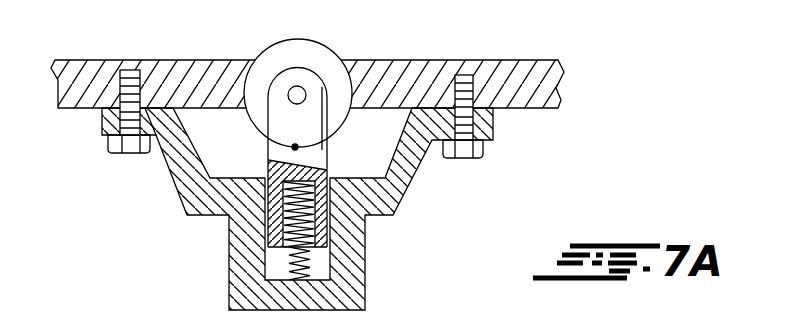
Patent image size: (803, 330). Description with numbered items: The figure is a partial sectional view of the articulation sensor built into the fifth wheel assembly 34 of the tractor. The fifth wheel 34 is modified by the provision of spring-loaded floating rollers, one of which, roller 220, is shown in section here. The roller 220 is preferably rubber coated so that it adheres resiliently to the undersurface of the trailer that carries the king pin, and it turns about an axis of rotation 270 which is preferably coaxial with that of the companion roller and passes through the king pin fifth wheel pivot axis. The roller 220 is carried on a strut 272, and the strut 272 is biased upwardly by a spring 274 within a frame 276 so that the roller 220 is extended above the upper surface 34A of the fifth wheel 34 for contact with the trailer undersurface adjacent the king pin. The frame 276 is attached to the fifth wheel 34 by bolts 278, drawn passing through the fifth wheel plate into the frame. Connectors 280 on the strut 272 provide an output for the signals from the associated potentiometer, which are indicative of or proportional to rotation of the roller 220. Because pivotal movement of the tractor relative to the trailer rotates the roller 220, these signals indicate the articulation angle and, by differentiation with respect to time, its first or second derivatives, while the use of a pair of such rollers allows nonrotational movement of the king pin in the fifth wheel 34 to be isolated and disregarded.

The fifth wheel assembly 34 is at (513, 72).
The upper surface of the fifth wheel 34A is at (115, 58).
The roller 220 is at (267, 48).
The axis of rotation 270 is at (308, 83).
The strut 272 is at (317, 157).
The spring 274 is at (282, 213).
The frame 276 is at (357, 272).
The bolts 278 is at (132, 153).
The connectors 280 is at (295, 147).